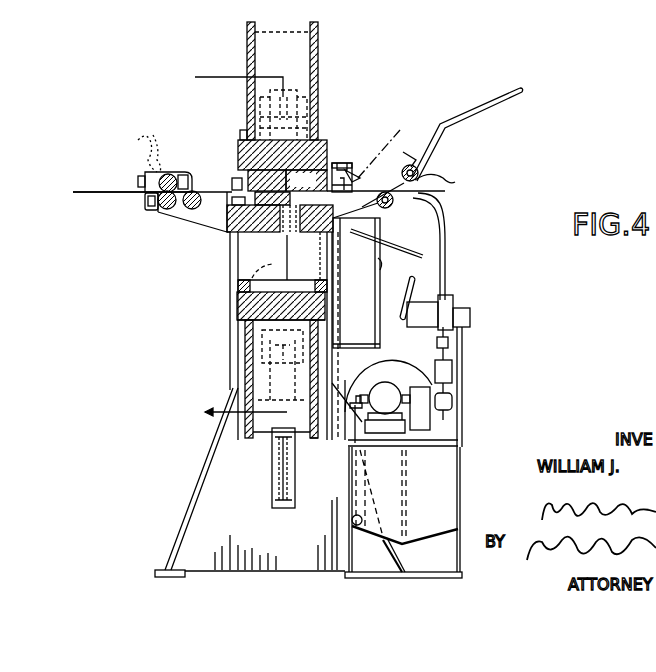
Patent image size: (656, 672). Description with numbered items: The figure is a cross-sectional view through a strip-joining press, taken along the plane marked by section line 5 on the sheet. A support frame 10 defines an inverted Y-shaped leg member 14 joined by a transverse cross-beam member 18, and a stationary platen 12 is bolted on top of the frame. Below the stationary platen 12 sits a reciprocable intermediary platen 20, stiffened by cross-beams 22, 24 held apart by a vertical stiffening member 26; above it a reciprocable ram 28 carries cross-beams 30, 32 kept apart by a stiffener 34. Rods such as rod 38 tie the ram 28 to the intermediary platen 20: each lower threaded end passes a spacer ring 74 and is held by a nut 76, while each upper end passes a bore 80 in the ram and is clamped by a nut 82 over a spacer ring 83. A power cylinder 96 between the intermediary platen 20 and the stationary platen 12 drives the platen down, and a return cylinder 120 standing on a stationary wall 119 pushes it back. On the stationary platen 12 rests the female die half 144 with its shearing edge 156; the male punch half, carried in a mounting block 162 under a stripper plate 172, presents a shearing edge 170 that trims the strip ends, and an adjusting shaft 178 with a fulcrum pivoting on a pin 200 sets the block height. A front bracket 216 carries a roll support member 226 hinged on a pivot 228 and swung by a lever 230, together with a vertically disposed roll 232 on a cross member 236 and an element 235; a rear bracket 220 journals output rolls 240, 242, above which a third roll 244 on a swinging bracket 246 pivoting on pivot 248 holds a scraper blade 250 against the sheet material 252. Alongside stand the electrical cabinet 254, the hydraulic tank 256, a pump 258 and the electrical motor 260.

The section line 5- 5 is at (281, 211).
The support frame 10 is at (176, 514).
The stationary platen 12 is at (238, 265).
The leg member 14 is at (175, 548).
The cross-beam member 18 is at (278, 482).
The intermediary platen 20 is at (237, 310).
The cross-beam 22 is at (233, 386).
The cross-beam 24 is at (318, 440).
The vertical stiffening member 26 is at (262, 440).
The reciprocable ram 28 is at (340, 160).
The cross-beam 30 is at (247, 50).
The cross-beam 32 is at (318, 42).
The stiffener 34 is at (268, 40).
The rod 38 is at (236, 294).
The spacer ring 74 is at (245, 341).
The nut 76 is at (245, 358).
The bore 80 is at (318, 85).
The nut 82 is at (300, 102).
The spacer ring 83 is at (307, 128).
The power cylinder 96 is at (327, 282).
The stationary wall 119 is at (262, 380).
The return cylinder 120 is at (285, 402).
The female die half 144 is at (282, 257).
The shearing edge 156 is at (277, 267).
The mounting block 162 is at (306, 180).
The shearing edge 170 is at (311, 256).
The stripper plate 172 is at (238, 155).
The adjusting shaft 178 is at (240, 142).
The pin 200 is at (427, 5).
The front bracket 216 is at (392, 212).
The rear bracket 220 is at (188, 235).
The roll support member 226 is at (440, 160).
The pivot 228 is at (419, 149).
The lever 230 is at (446, 254).
The vertically disposed roll 232 is at (382, 211).
The stop block 235 is at (232, 184).
The cross member 236 is at (372, 155).
The output roll 240 is at (193, 226).
The output roll 242 is at (155, 215).
The third roll 244 is at (148, 210).
The swinging bracket 246 is at (172, 172).
The pivot 248 is at (138, 181).
The scraper blade 250 is at (248, 176).
The sheet material 252 is at (75, 192).
The electrical cabinet 254 is at (368, 342).
The tank 256 is at (435, 518).
The pump 258 is at (423, 408).
The electrical motor 260 is at (388, 398).